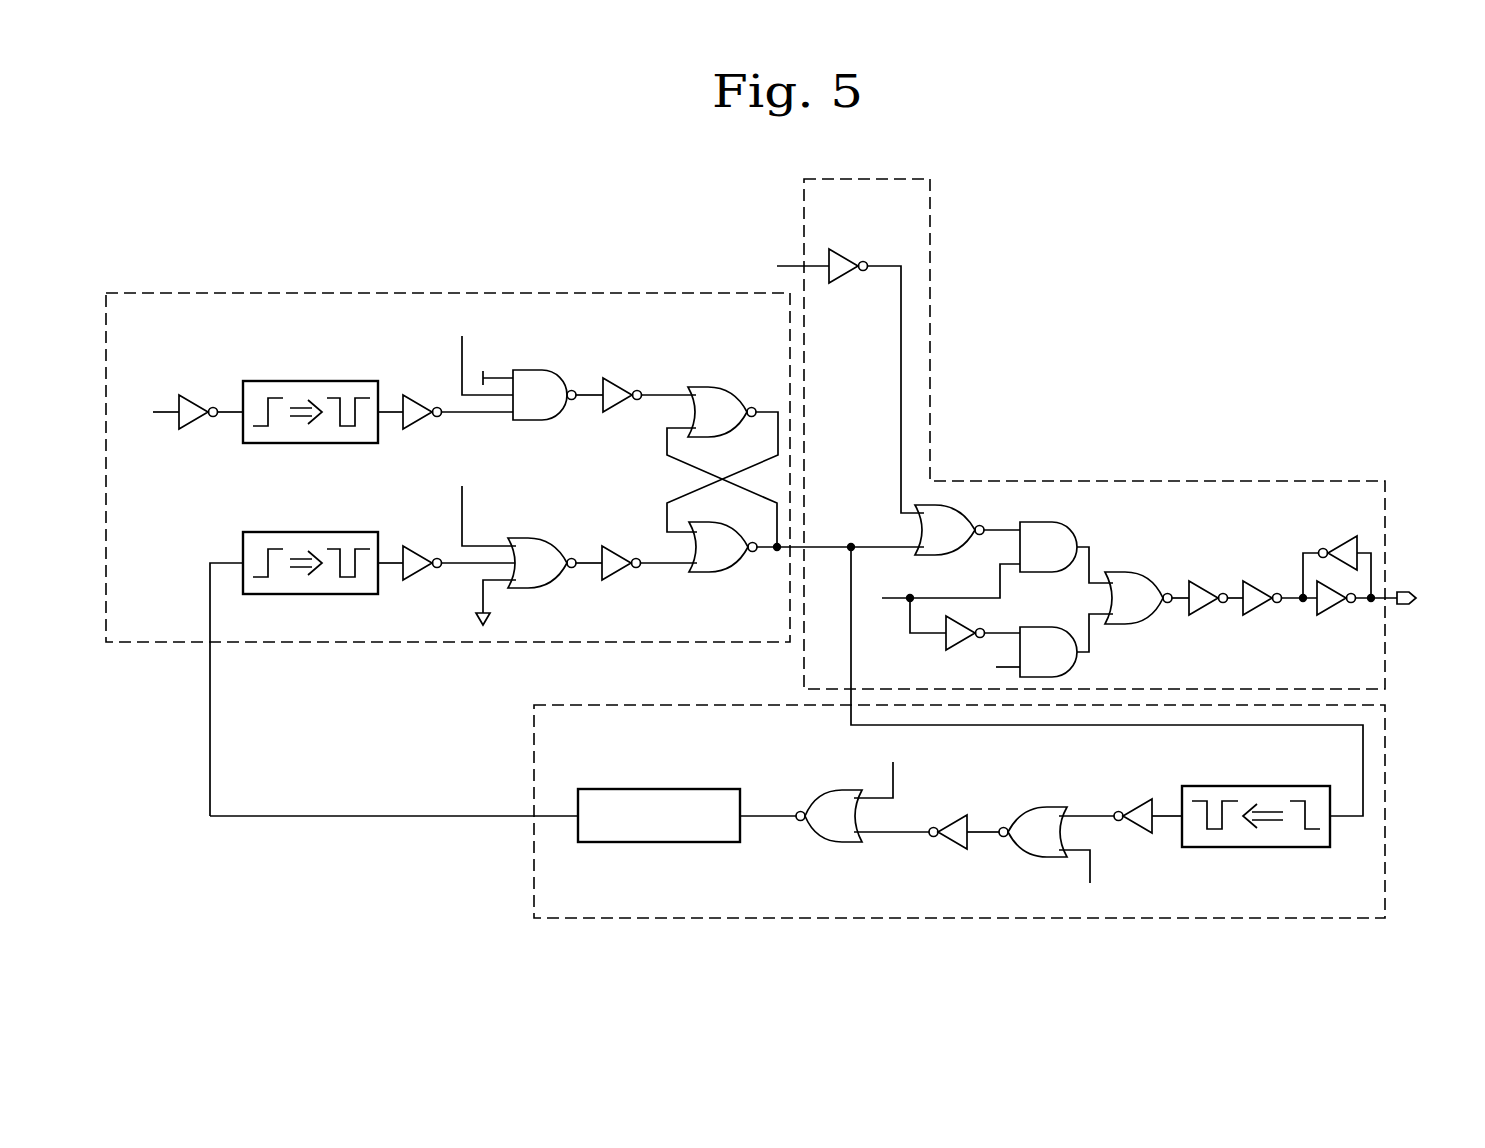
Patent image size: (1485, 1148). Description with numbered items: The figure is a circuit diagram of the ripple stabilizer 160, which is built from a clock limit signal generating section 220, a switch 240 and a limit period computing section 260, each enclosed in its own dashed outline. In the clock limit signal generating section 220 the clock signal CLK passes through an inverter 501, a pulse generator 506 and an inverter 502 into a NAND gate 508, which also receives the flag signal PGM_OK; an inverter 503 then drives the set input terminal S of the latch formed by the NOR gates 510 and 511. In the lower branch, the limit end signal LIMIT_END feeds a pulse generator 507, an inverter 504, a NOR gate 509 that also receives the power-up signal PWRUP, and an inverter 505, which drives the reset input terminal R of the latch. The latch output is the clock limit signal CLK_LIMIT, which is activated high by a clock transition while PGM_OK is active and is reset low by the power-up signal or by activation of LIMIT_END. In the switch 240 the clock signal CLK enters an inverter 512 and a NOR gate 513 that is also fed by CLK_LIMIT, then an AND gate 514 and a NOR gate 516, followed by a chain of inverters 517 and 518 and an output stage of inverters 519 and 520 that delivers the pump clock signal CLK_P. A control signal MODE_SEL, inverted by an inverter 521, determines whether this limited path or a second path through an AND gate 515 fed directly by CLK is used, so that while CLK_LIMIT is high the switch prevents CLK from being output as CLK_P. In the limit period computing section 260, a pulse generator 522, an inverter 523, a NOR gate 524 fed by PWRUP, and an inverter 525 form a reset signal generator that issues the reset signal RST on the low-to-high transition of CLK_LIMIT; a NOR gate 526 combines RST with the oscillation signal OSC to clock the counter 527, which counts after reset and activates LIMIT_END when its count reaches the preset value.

The ripple stabilizer 160 is at (1268, 214).
The clock limit signal generating section 220 is at (627, 293).
The switch 240 is at (933, 318).
The limit period computing section 260 is at (532, 740).
The inverter 501 is at (197, 393).
The inverter 502 is at (422, 393).
The inverter 503 is at (622, 378).
The inverter 504 is at (422, 546).
The inverter 505 is at (622, 546).
The pulse generator 506 is at (334, 381).
The pulse generator 507 is at (334, 532).
The NAND gate 508 is at (521, 406).
The NOR gate 509 is at (520, 574).
The NOR gate 510 is at (700, 423).
The NOR gate 511 is at (699, 558).
The inverter 512 is at (847, 248).
The NOR gate 513 is at (928, 541).
The AND gate 514 is at (1030, 558).
The AND gate 515 is at (1030, 663).
The NOR gate 516 is at (1117, 609).
The inverter 517 is at (1206, 581).
The inverter 518 is at (1261, 581).
The inverter 519 is at (1338, 536).
The inverter 520 is at (1337, 617).
The inverter 521 is at (940, 641).
The pulse generator 522 is at (1283, 786).
The inverter 523 is at (1136, 798).
The NOR gate 524 is at (1023, 843).
The inverter 525 is at (950, 815).
The NOR gate 526 is at (818, 827).
The counter 527 is at (697, 789).